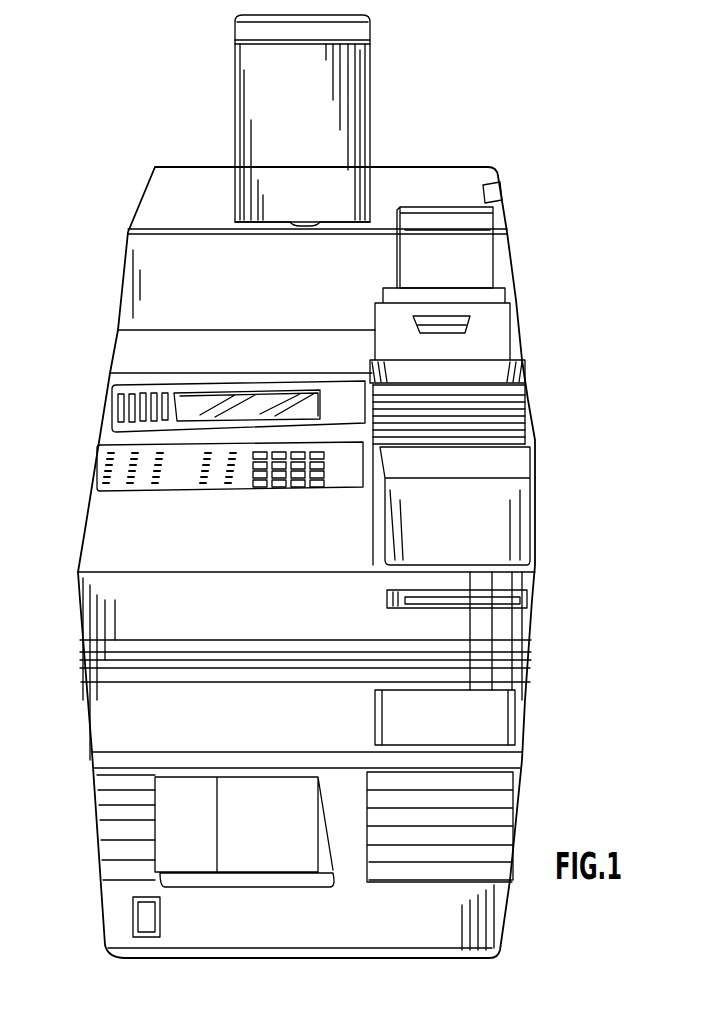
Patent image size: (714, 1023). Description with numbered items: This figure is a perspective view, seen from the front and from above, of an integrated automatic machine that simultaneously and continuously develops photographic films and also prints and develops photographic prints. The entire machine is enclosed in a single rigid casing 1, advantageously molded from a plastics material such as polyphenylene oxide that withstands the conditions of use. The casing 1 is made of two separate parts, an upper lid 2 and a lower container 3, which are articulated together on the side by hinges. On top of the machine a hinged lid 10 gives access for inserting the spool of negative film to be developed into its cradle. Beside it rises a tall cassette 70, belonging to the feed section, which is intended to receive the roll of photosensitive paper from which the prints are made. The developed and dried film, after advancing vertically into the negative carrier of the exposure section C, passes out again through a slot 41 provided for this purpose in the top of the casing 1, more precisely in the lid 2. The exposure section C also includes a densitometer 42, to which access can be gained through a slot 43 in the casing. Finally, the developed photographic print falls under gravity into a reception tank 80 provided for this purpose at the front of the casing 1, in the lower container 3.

The casing 1 is at (605, 561).
The lid 2 is at (140, 357).
The container 3 is at (115, 748).
The hinged lid 10 is at (480, 253).
The slot 41 is at (455, 326).
The densitometer 42 is at (500, 465).
The slot 43 is at (528, 600).
The cassette 70 is at (370, 93).
The reception tank 80 is at (260, 848).
The exposure section C is at (500, 377).